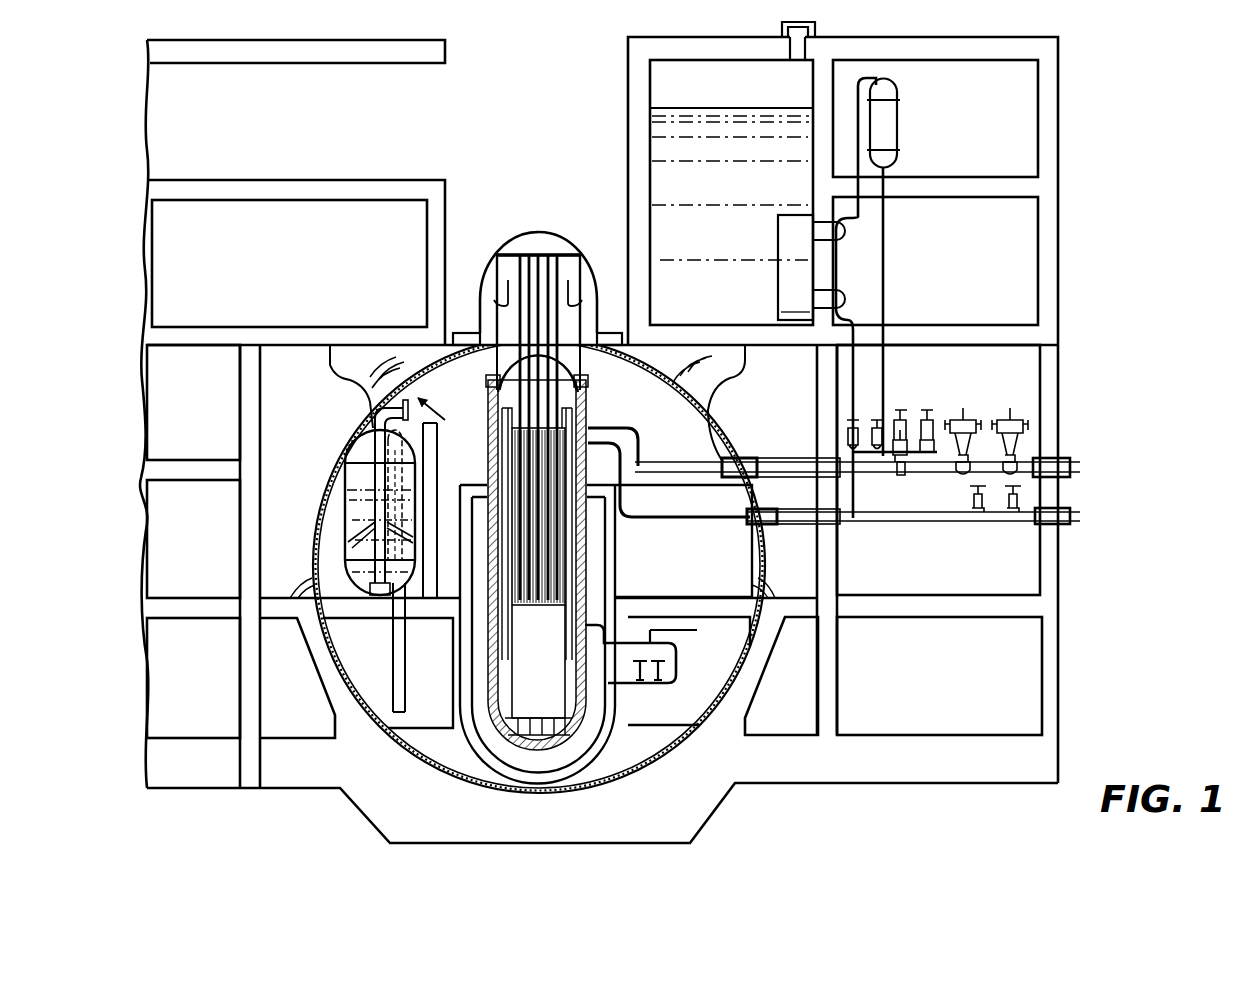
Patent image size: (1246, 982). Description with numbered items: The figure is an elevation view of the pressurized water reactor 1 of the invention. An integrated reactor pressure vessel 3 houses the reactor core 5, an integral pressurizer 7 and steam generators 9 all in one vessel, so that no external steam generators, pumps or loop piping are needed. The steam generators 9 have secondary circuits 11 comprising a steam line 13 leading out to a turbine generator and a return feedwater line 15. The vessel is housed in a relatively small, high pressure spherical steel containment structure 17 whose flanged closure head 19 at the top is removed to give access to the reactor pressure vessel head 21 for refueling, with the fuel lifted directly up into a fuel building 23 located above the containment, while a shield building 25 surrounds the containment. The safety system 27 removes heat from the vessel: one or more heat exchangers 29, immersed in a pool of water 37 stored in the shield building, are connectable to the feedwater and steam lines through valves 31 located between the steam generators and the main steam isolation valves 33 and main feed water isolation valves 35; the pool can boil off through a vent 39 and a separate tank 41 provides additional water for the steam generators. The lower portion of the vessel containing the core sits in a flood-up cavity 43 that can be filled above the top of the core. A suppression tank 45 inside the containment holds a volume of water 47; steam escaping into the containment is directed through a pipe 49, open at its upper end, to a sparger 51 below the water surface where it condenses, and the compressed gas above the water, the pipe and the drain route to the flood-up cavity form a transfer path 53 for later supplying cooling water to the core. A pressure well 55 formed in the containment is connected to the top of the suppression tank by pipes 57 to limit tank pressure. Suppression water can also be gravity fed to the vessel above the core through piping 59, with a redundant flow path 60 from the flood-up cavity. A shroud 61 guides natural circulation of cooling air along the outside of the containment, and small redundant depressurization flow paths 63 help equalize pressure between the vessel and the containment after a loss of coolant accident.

The pressurized water reactor 1 is at (540, 72).
The integrated reactor pressure vessel 3 is at (592, 553).
The reactor core 5 is at (558, 700).
The integral pressurizer 7 is at (580, 392).
The steam generators 9 is at (500, 518).
The secondary circuits 11 is at (780, 440).
The steam line 13 is at (747, 455).
The feedwater line 15 is at (885, 512).
The containment structure 17 is at (400, 738).
The flanged closure head 19 is at (508, 232).
The reactor pressure vessel head 21 is at (575, 356).
The fuel building 23 is at (438, 152).
The shield building 25 is at (1100, 562).
The safety system 27 is at (905, 365).
The heat exchangers 29 is at (778, 294).
The valves 31 is at (930, 410).
The main steam isolation valves 33 is at (1010, 410).
The main feed water isolation valves 35 is at (1010, 525).
The pool of water 37 is at (690, 108).
The vent 39 is at (815, 32).
The tank 41 is at (900, 104).
The flood-up cavity 43 is at (498, 752).
The suppression tank 45 is at (345, 518).
The water 47 is at (345, 490).
The pipe 49 is at (368, 420).
The sparger 51 is at (358, 548).
The transfer path 53 is at (444, 419).
The pressure well 55 is at (420, 695).
The pipes 57 is at (403, 667).
The piping 59 is at (390, 600).
The flow path 60 is at (608, 683).
The shroud 61 is at (345, 372).
The depressurization flow paths 63 is at (483, 366).